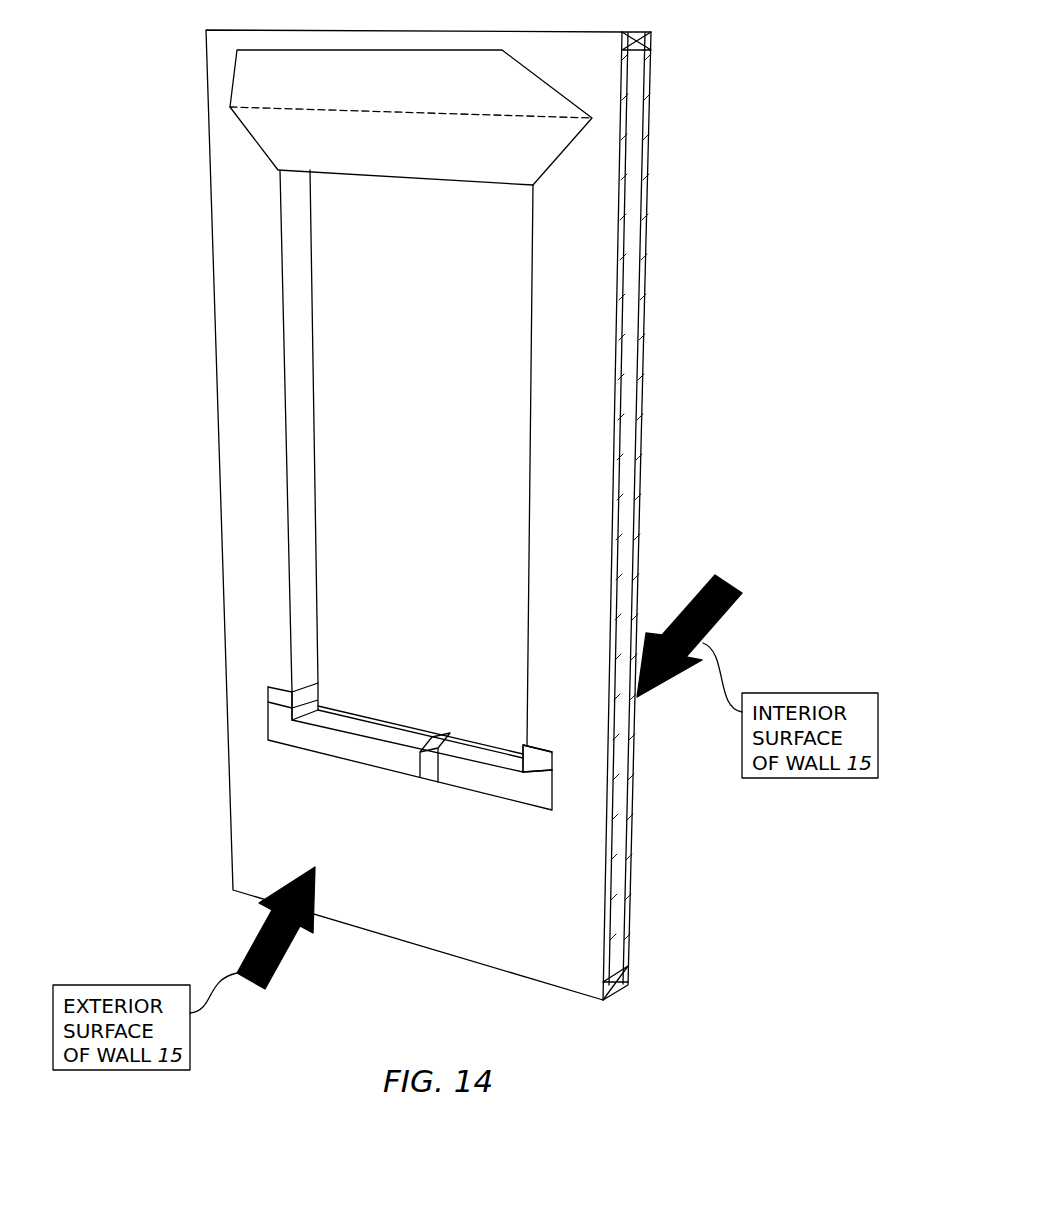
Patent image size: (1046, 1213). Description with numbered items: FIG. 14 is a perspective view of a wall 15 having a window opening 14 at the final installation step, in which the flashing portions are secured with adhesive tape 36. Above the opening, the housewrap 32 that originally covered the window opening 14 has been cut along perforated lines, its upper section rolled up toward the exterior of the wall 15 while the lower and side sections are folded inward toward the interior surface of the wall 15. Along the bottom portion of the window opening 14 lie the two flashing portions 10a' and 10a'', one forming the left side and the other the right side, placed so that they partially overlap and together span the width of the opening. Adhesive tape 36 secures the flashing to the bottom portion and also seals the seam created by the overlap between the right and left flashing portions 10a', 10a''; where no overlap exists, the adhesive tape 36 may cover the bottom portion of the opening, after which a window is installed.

The window opening 14 is at (480, 383).
The wall 15 is at (622, 920).
The housewrap 32 is at (389, 96).
The adhesive tape 36 is at (315, 678).
The flashing portion 10a' is at (299, 774).
The flashing portion 10a'' is at (570, 763).